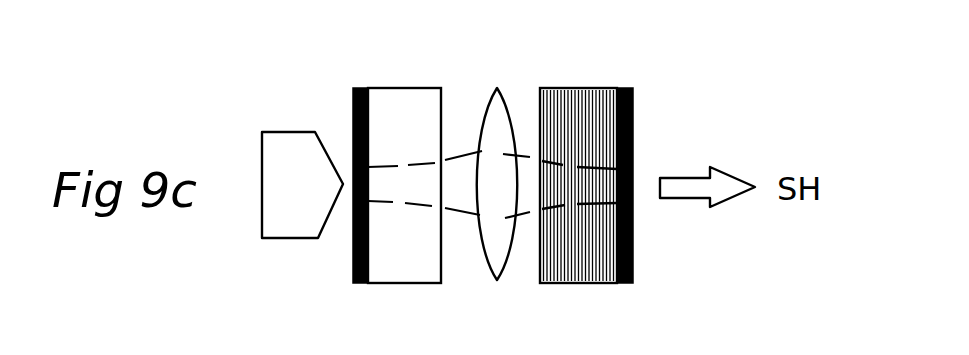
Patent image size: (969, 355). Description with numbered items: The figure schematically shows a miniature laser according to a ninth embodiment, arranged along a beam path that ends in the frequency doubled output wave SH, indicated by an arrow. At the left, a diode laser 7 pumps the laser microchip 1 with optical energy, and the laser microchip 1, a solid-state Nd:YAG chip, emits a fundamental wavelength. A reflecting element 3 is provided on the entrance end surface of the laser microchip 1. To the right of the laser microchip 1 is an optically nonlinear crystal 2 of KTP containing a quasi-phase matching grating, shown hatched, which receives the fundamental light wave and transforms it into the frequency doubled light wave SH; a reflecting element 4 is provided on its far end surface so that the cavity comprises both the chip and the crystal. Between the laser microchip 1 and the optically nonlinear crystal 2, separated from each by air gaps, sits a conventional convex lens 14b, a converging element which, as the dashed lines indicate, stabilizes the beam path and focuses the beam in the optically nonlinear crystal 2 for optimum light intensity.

The diode laser 7 is at (279, 148).
The reflecting element 3 is at (353, 110).
The laser microchip 1 is at (407, 112).
The convex lens 14b is at (501, 122).
The optically nonlinear crystal 2 is at (588, 110).
The reflecting element 4 is at (633, 115).